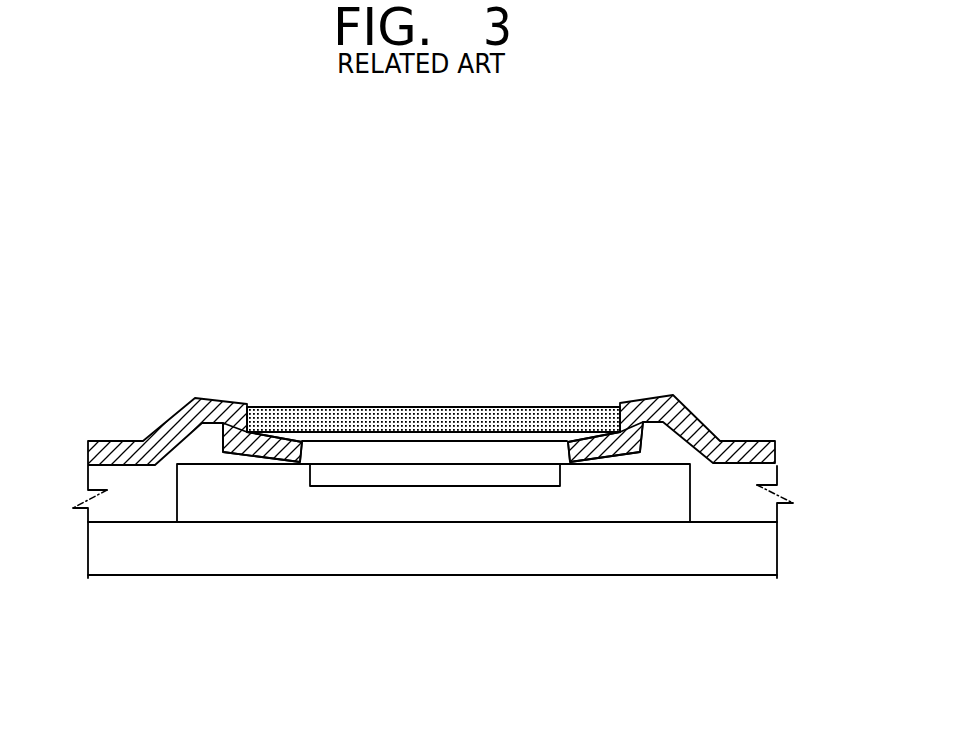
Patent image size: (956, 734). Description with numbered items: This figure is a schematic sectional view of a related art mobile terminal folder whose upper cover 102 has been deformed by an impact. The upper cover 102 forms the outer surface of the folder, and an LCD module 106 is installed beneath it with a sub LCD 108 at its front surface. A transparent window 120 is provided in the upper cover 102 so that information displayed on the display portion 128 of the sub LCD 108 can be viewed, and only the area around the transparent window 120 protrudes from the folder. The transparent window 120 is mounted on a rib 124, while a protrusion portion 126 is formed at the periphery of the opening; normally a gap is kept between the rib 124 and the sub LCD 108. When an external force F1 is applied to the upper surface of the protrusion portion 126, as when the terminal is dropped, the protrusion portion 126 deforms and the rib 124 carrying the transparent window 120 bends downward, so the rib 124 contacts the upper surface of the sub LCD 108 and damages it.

The upper cover 102 is at (122, 446).
The LCD module 106 is at (312, 558).
The sub LCD 108 is at (389, 513).
The transparent window 120 is at (422, 414).
The rib 124 is at (272, 448).
The protrusion portion 126 is at (698, 426).
The display portion 128 is at (488, 473).
The external force F1 is at (208, 378).